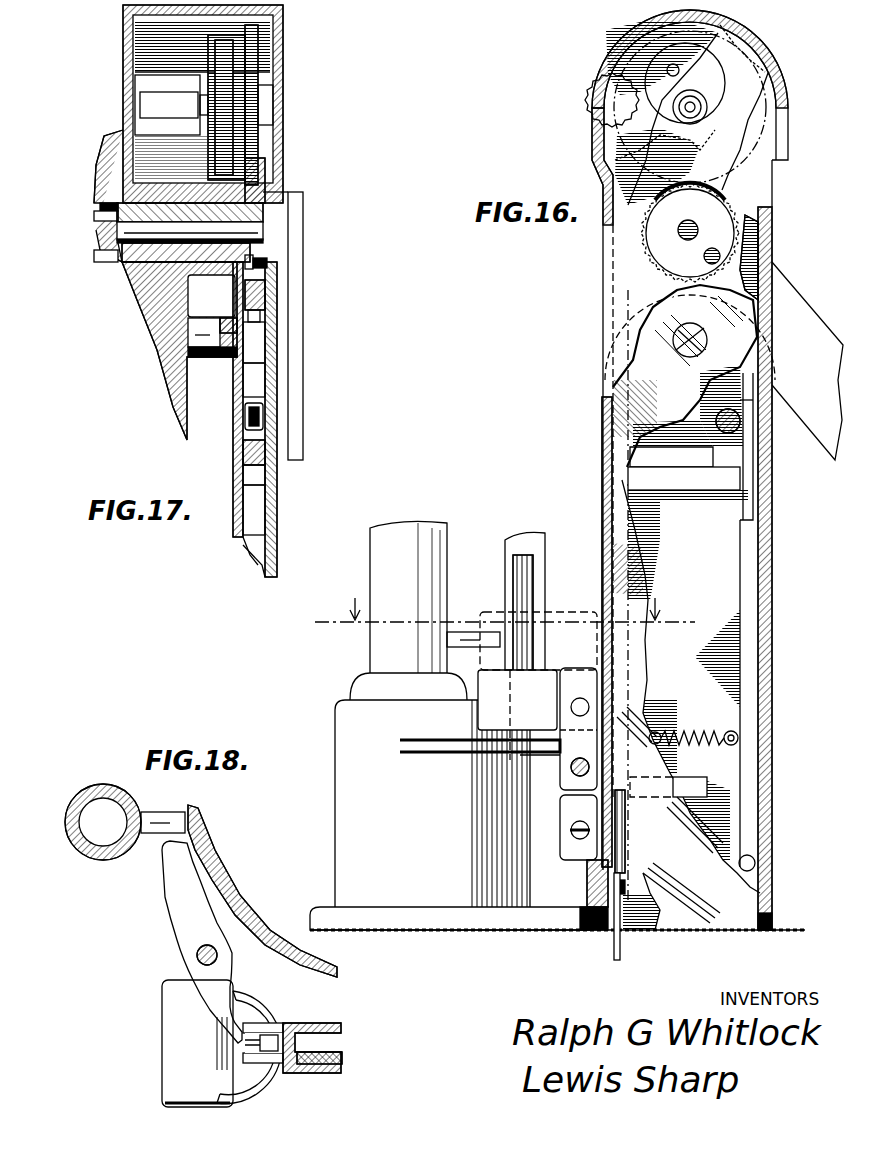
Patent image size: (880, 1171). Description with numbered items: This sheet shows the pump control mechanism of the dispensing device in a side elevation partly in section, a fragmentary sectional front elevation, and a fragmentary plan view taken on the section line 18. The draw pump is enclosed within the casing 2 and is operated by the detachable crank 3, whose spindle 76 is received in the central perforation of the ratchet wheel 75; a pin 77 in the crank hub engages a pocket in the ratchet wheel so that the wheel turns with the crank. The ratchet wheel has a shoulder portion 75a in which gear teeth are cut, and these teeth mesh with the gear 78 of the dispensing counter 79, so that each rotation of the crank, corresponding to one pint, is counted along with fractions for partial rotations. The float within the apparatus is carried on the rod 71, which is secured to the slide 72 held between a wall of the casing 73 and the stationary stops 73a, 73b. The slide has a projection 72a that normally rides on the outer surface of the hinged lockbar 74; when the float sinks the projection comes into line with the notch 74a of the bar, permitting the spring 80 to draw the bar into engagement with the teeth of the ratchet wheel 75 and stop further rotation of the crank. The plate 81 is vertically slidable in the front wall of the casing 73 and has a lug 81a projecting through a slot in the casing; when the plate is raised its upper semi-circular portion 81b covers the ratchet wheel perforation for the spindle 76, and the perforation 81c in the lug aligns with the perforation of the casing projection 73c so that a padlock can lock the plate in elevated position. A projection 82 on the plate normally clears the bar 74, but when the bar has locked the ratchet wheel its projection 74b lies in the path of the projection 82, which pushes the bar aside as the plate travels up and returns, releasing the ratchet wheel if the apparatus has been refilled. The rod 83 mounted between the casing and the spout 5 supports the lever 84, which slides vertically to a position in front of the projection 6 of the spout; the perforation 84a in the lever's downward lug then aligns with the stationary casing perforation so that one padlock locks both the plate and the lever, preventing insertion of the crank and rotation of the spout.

In FIG. 17, the casing 2 is at (110, 128).
In FIG. 18, the casing 2 is at (210, 868).
In FIG. 17, the crank 3 is at (297, 290).
In FIG. 16, the crank 3 is at (803, 300).
In FIG. 16, the drip pipe 5 is at (372, 565).
In FIG. 18, the drip pipe 5 is at (118, 790).
In FIG. 16, the projection of the spout 6 is at (460, 632).
In FIG. 18, the projection of the spout 6 is at (165, 812).
In FIG. 16, the section line 18- 18 is at (505, 609).
In FIG. 16, the rod 71 is at (620, 950).
In FIG. 16, the slide 72 is at (620, 500).
In FIG. 17, the projection 72a is at (255, 480).
In FIG. 16, the projection 72a is at (725, 478).
In FIG. 16, the casing 73 is at (602, 338).
In FIG. 18, the casing 73 is at (335, 1022).
In FIG. 16, the stationary stop 73a is at (660, 458).
In FIG. 16, the stationary stop 73b is at (698, 790).
In FIG. 16, the casing projection 73c is at (560, 775).
In FIG. 18, the casing projection 73c is at (275, 1025).
In FIG. 17, the hinged lockbar 74 is at (248, 550).
In FIG. 16, the hinged lockbar 74 is at (752, 608).
In FIG. 16, the notch 74a is at (748, 518).
In FIG. 17, the projection 74b is at (255, 384).
In FIG. 16, the projection 74b is at (745, 390).
In FIG. 17, the ratchet wheel 75 is at (266, 165).
In FIG. 16, the ratchet wheel 75 is at (762, 250).
In FIG. 17, the shoulder portion 75a is at (268, 200).
In FIG. 16, the shoulder portion 75a is at (735, 230).
In FIG. 17, the spindle 76 is at (125, 240).
In FIG. 17, the pin 77 is at (262, 262).
In FIG. 17, the gear 78 is at (255, 60).
In FIG. 16, the gear 78 is at (740, 58).
In FIG. 17, the dispensing counter 79 is at (145, 82).
In FIG. 16, the dispensing counter 79 is at (598, 80).
In FIG. 16, the spring 80 is at (683, 732).
In FIG. 17, the plate 81 is at (273, 506).
In FIG. 16, the plate 81 is at (669, 818).
In FIG. 18, the plate 81 is at (330, 1065).
In FIG. 16, the lug 81a is at (575, 862).
In FIG. 18, the lug 81a is at (278, 1063).
In FIG. 17, the upper semi-circular portion 81b is at (272, 300).
In FIG. 16, the upper semi-circular portion 81b is at (632, 312).
In FIG. 16, the perforation 81c is at (570, 835).
In FIG. 17, the projection 82 is at (258, 412).
In FIG. 16, the projection 82 is at (741, 430).
In FIG. 16, the rod 83 is at (575, 767).
In FIG. 18, the rod 83 is at (197, 958).
In FIG. 16, the lever 84 is at (568, 616).
In FIG. 18, the lever 84 is at (170, 888).
In FIG. 16, the perforation 84a is at (565, 765).
In FIG. 18, the perforation 84a is at (235, 1045).